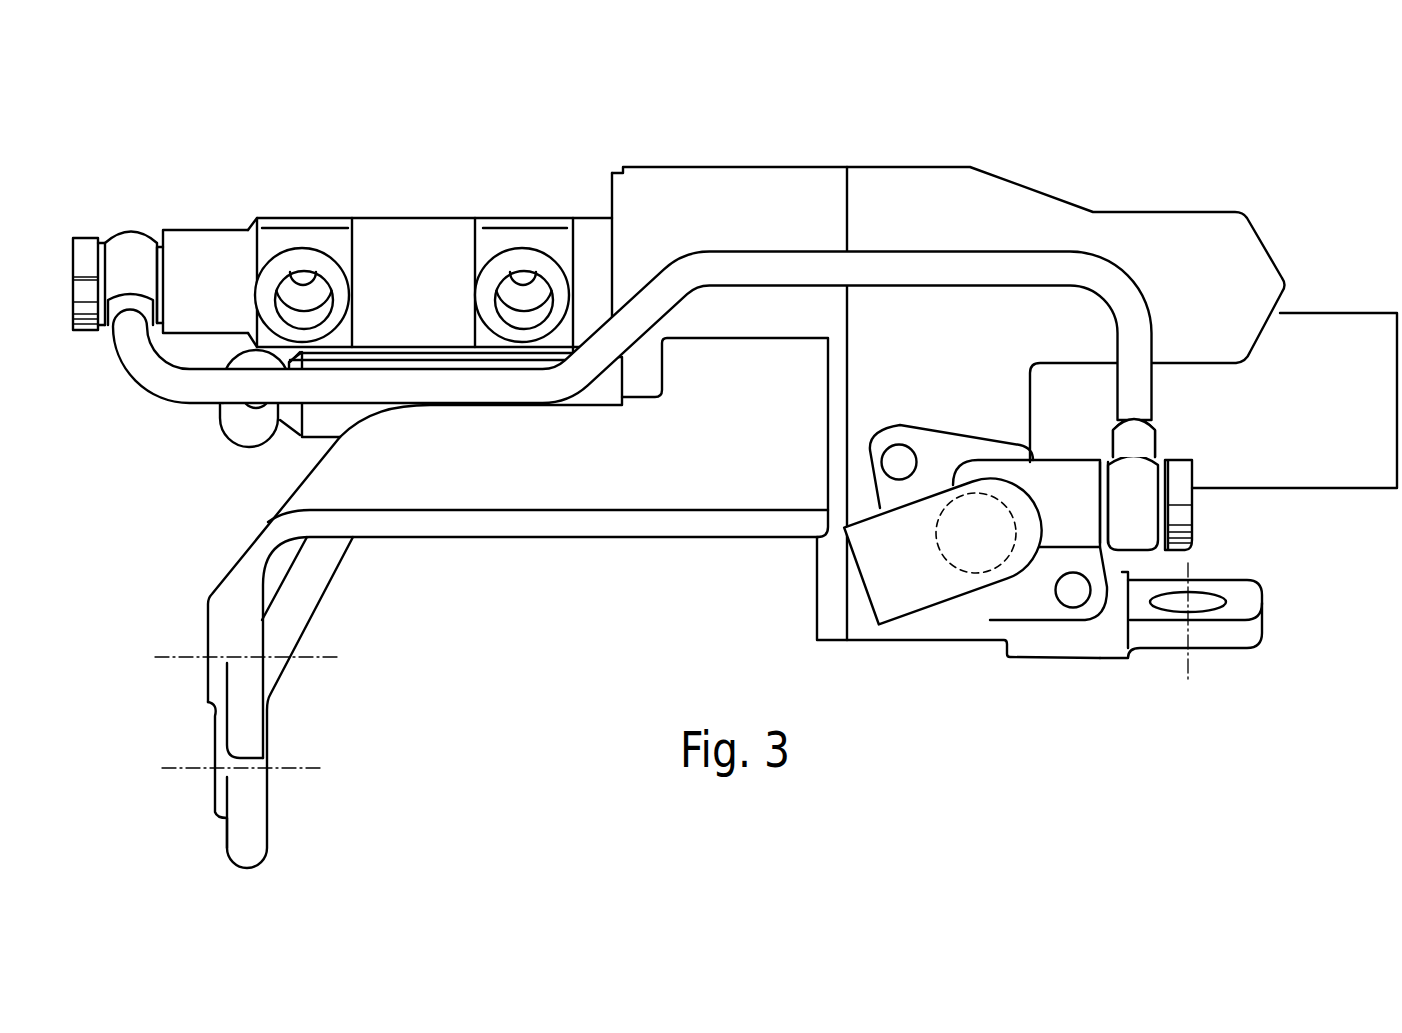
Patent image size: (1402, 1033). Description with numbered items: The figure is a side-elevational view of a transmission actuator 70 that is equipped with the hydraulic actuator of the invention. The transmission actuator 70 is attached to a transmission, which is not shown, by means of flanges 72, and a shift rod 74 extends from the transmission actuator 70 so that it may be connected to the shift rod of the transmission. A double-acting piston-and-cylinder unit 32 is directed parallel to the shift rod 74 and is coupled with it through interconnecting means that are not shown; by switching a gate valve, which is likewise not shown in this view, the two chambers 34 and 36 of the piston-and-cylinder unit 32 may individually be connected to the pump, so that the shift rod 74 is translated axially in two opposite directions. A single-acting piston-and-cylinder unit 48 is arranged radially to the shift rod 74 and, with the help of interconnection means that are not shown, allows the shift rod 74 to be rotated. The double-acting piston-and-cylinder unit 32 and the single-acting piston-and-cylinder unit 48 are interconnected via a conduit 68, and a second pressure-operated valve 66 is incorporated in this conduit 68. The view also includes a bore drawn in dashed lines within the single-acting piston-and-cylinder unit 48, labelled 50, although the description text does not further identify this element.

The double-acting piston-and-cylinder unit 32 is at (418, 220).
The chamber 34 is at (304, 288).
The chamber 36 is at (524, 290).
The single-acting piston-and-cylinder unit 48 is at (987, 590).
The fitting bore 50 is at (967, 547).
The second pressure-operated valve 66 is at (92, 237).
The conduit 68 is at (762, 262).
The transmission actuator 70 is at (1181, 153).
The flanges 72 is at (242, 700).
The shift rod 74 is at (318, 420).